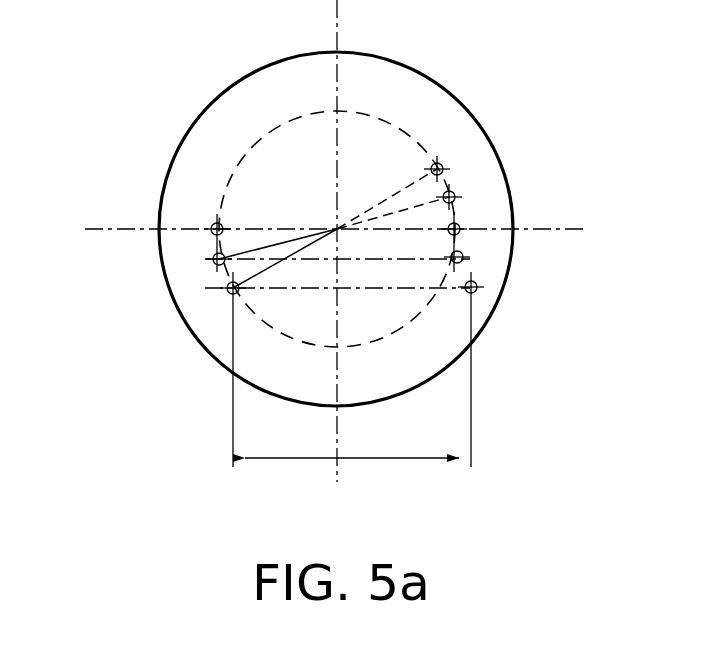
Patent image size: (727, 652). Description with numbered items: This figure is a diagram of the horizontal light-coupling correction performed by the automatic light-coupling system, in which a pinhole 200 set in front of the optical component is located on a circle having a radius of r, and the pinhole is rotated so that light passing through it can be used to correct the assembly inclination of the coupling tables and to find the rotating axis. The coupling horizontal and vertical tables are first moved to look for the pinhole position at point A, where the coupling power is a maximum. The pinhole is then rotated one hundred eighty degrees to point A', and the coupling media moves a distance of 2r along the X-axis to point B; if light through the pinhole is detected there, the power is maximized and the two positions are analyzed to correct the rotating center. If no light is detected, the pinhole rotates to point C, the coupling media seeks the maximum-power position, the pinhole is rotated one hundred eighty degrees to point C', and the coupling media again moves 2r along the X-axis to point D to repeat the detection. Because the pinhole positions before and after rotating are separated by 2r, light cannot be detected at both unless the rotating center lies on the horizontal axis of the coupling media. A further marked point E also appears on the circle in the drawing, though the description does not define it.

The pinhole 200 is at (214, 259).
The point E is at (184, 176).
The point A is at (156, 222).
The point C is at (171, 369).
The point C' is at (454, 93).
The point A' is at (476, 122).
The point B is at (525, 219).
The point D is at (538, 369).
The radius of the circle r is at (244, 243).
The distance 2r is at (352, 437).